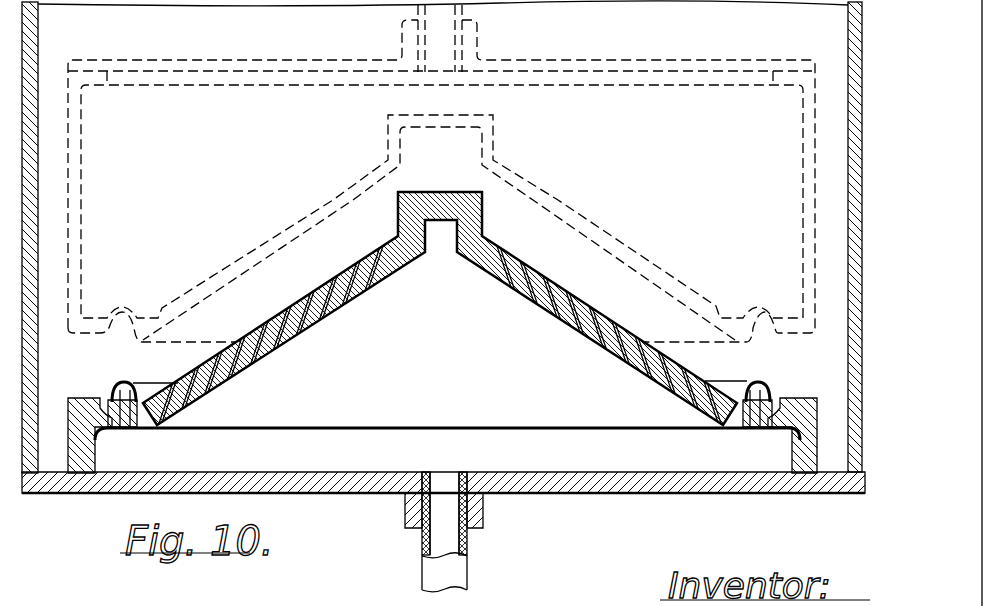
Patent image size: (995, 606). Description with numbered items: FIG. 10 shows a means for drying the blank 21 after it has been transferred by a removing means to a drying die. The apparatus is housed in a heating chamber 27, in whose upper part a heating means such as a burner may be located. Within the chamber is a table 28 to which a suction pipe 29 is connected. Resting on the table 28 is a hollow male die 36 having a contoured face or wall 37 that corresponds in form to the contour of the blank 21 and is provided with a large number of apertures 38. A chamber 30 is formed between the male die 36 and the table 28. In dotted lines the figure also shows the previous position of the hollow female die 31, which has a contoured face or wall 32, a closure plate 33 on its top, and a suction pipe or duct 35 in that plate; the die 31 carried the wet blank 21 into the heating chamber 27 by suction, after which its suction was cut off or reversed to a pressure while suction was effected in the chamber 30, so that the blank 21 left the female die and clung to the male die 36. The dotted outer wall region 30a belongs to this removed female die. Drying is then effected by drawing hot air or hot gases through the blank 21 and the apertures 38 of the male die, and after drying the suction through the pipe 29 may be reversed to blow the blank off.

The blank 21 is at (440, 308).
The heating chamber 27 is at (848, 43).
The table 28 is at (738, 495).
The suction pipe 29 is at (445, 543).
The chamber 30 is at (447, 405).
The outer shell wall 30a is at (792, 73).
The hollow female die 31 is at (805, 173).
The contoured face or wall 32 is at (658, 282).
The closure plate 33 is at (634, 63).
The suction pipe or duct 35 is at (452, 38).
The hollow male die 36 is at (825, 438).
The contoured face or wall 37 is at (560, 306).
The apertures 38 is at (633, 357).